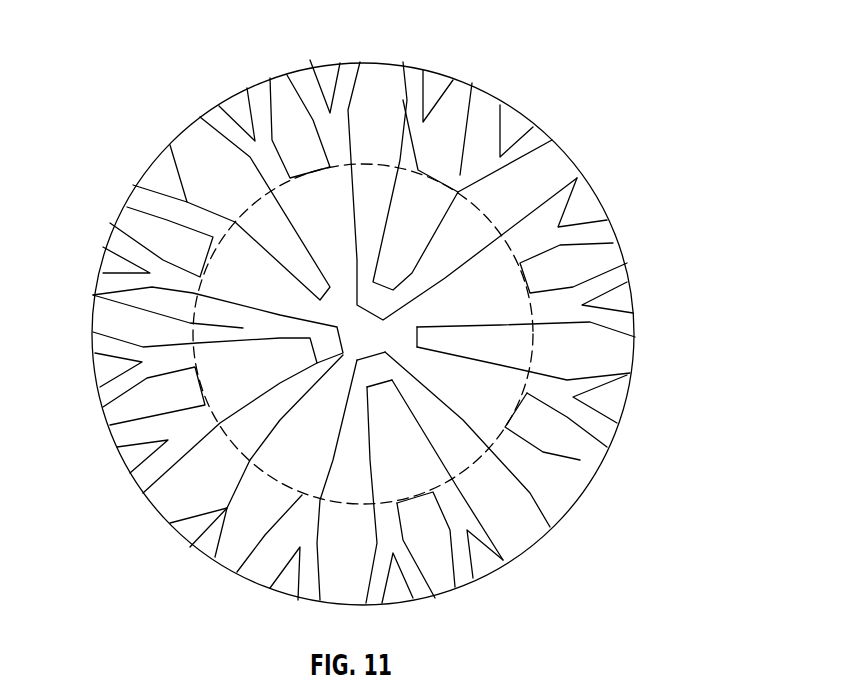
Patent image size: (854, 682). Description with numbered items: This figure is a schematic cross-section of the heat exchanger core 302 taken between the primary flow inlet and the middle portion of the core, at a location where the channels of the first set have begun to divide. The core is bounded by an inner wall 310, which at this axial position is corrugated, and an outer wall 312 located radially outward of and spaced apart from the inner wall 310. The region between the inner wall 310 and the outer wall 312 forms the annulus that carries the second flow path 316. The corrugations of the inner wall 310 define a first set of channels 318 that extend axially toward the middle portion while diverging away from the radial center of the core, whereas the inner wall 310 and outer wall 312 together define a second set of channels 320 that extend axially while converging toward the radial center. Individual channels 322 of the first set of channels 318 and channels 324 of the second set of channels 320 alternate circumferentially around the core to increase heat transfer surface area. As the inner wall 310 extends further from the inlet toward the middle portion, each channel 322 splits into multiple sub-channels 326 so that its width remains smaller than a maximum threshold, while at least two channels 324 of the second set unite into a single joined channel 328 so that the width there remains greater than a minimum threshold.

The heat exchanger core 302 is at (136, 176).
The inner wall 310 is at (163, 420).
The outer wall 312 is at (603, 452).
The second flow path 316 is at (516, 506).
The first set of channels 318 is at (494, 136).
The second set of channels 320 is at (246, 212).
The channel of the first set of channels 322 is at (570, 202).
The channel of the second set of channels 324 is at (383, 177).
The sub-channel 326 is at (633, 260).
The joined channel 328 is at (367, 278).